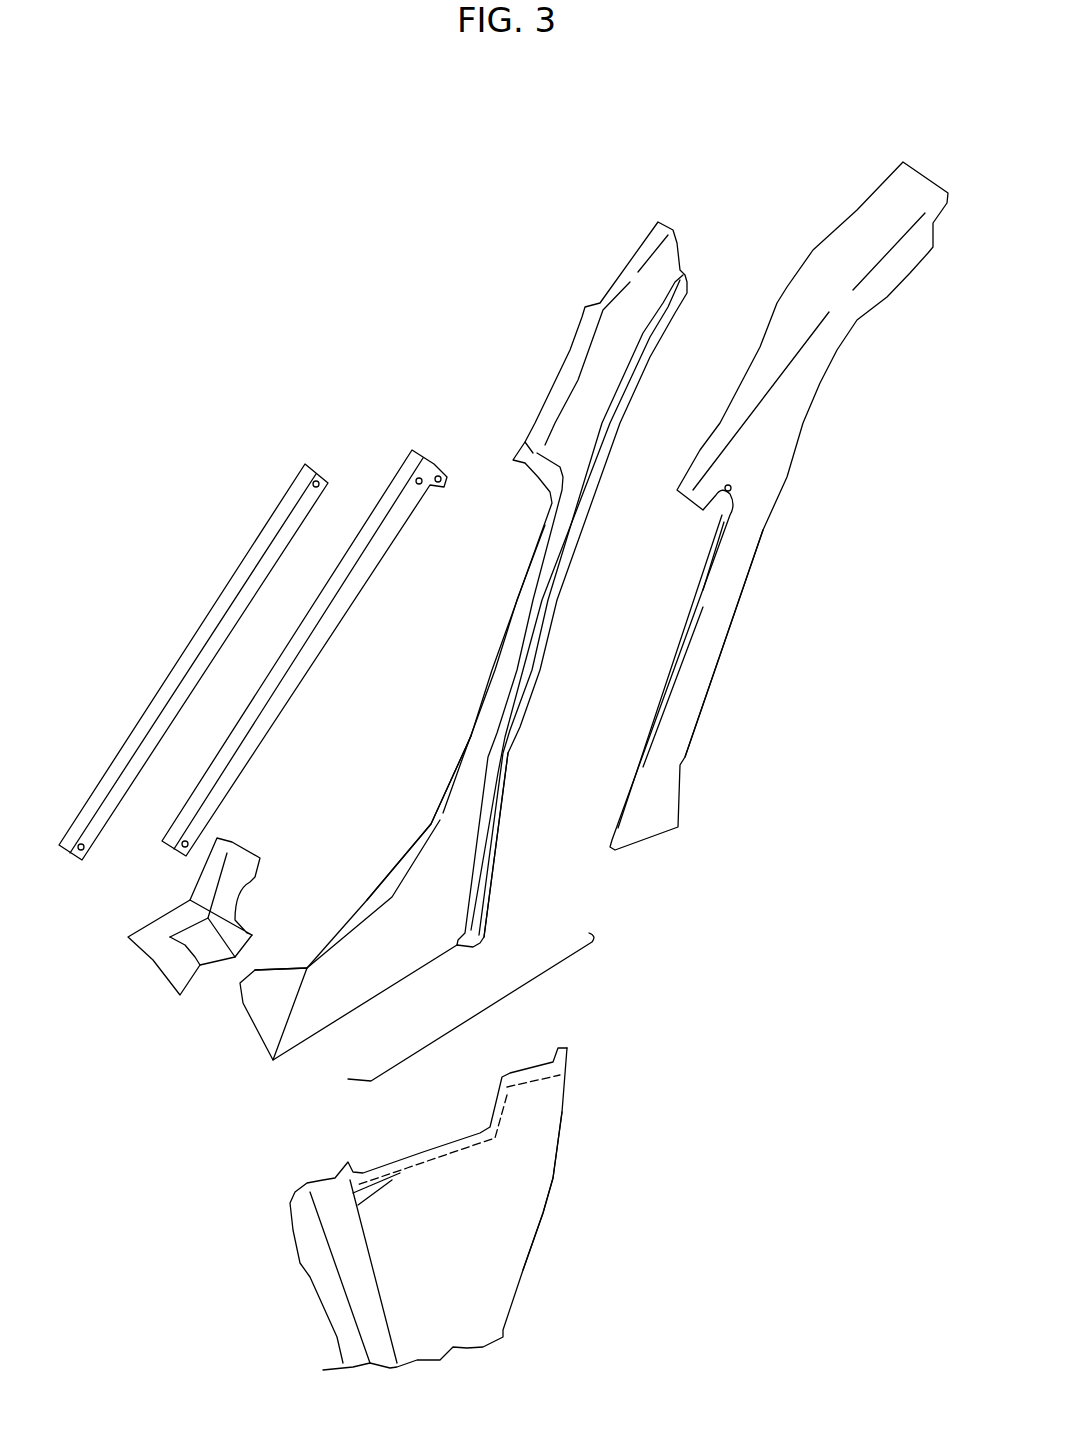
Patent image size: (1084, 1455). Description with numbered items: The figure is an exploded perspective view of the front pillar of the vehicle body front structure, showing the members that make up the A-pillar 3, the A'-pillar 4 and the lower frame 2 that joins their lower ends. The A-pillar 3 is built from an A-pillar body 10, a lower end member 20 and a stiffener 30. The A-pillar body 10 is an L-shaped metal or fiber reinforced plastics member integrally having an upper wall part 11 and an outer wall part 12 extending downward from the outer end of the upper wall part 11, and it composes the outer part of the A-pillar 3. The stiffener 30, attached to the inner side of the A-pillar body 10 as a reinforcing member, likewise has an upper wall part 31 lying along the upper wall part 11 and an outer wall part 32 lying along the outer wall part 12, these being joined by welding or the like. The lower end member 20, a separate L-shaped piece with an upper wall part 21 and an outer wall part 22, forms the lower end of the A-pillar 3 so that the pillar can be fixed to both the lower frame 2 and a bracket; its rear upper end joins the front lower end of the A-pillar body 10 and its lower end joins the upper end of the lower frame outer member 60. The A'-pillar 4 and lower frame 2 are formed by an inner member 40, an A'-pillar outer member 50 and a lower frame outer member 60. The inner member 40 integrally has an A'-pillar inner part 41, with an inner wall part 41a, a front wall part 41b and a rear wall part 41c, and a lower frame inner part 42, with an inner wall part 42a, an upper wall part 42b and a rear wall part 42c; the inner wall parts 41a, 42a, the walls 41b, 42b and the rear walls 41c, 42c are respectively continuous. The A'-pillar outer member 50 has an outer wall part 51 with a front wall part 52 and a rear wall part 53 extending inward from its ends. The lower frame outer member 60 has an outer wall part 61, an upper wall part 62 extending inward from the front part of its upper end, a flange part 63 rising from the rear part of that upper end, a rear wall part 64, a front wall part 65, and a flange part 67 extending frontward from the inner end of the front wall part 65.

The lower frame 2 is at (197, 1093).
The A-pillar 3 is at (292, 380).
The A'-pillar 4 is at (670, 162).
The A-pillar body 10 is at (403, 410).
The upper wall part 11 is at (378, 512).
The outer wall part 12 is at (406, 501).
The lower end member 20 is at (335, 813).
The upper wall part 21 is at (230, 852).
The outer wall part 22 is at (240, 879).
The stiffener 30 is at (281, 442).
The upper wall part 31 is at (238, 571).
The outer wall part 32 is at (287, 534).
The inner member 40 is at (597, 293).
The A'-pillar inner part 41 is at (455, 543).
The inner wall part 41a is at (533, 612).
The front wall part 41b is at (537, 553).
The rear wall part 41c is at (540, 653).
The lower frame inner part 42 is at (484, 1013).
The inner wall part 42a is at (350, 977).
The upper wall part 42b is at (378, 897).
The rear wall part 42c is at (482, 903).
The A'-pillar outer member 50 is at (800, 268).
The outer wall part 51 is at (718, 600).
The front wall part 52 is at (663, 657).
The rear wall part 53 is at (760, 563).
The lower frame outer member 60 is at (610, 1158).
The outer wall part 61 is at (478, 1210).
The upper wall part 62 is at (425, 1158).
The flange part 63 is at (543, 1100).
The rear wall part 64 is at (540, 1237).
The front wall part 65 is at (358, 1277).
The flange part 67 is at (313, 1240).